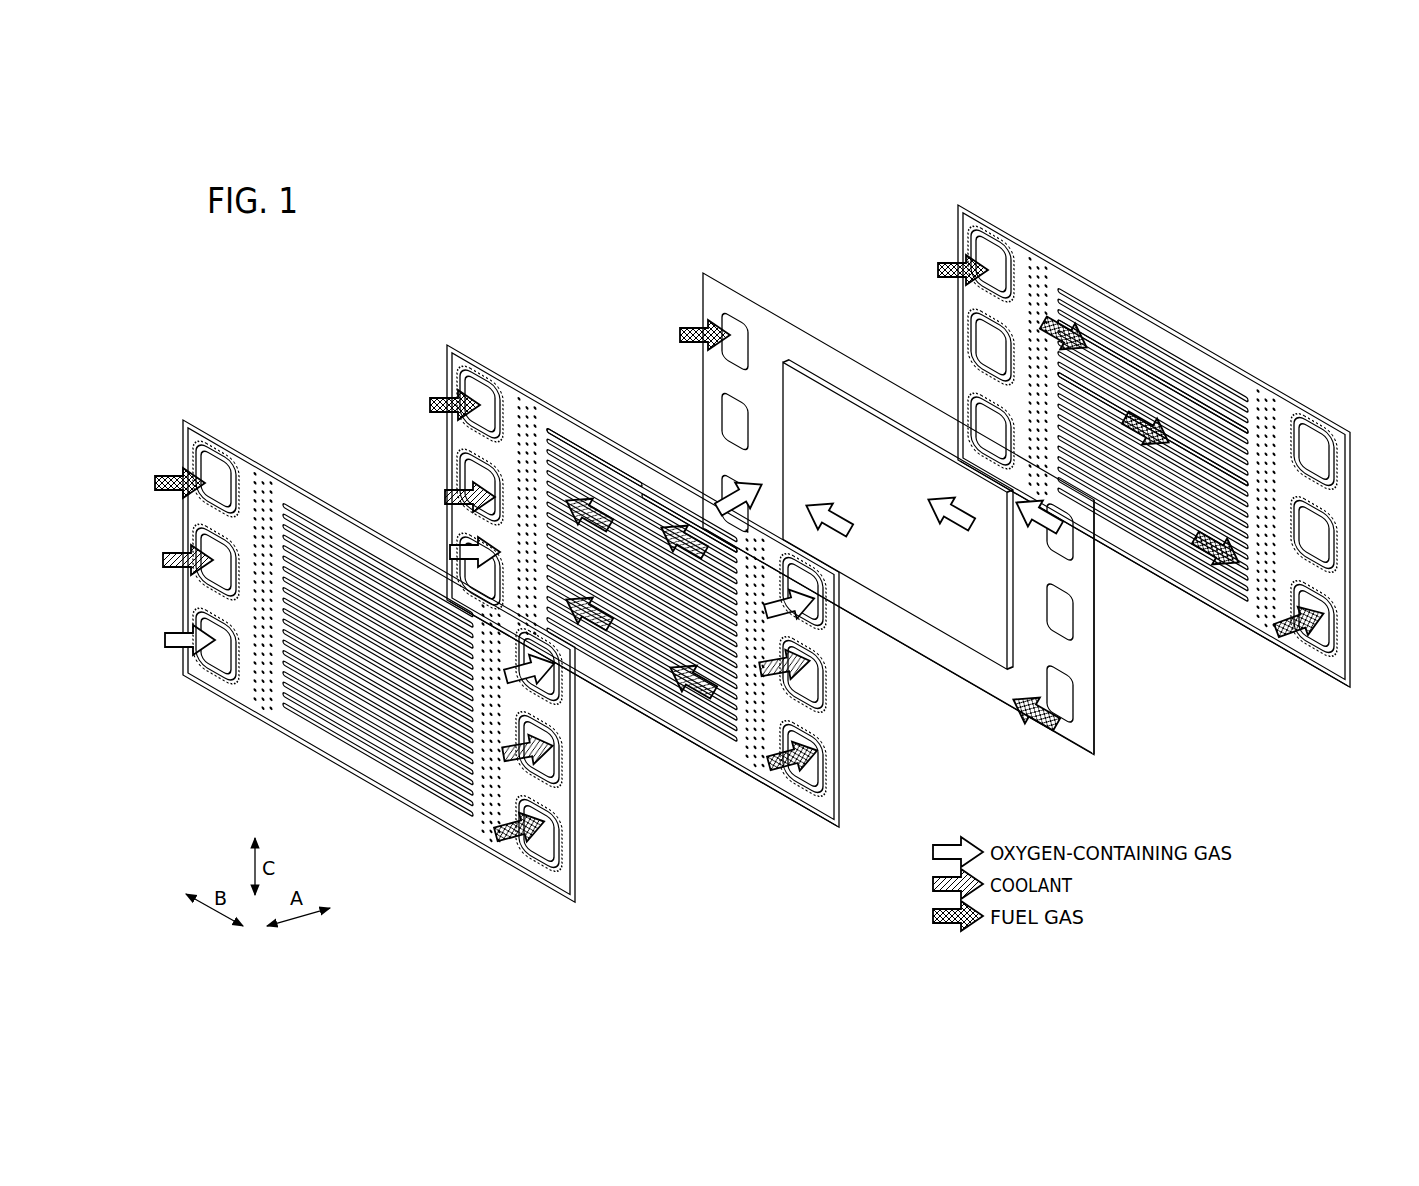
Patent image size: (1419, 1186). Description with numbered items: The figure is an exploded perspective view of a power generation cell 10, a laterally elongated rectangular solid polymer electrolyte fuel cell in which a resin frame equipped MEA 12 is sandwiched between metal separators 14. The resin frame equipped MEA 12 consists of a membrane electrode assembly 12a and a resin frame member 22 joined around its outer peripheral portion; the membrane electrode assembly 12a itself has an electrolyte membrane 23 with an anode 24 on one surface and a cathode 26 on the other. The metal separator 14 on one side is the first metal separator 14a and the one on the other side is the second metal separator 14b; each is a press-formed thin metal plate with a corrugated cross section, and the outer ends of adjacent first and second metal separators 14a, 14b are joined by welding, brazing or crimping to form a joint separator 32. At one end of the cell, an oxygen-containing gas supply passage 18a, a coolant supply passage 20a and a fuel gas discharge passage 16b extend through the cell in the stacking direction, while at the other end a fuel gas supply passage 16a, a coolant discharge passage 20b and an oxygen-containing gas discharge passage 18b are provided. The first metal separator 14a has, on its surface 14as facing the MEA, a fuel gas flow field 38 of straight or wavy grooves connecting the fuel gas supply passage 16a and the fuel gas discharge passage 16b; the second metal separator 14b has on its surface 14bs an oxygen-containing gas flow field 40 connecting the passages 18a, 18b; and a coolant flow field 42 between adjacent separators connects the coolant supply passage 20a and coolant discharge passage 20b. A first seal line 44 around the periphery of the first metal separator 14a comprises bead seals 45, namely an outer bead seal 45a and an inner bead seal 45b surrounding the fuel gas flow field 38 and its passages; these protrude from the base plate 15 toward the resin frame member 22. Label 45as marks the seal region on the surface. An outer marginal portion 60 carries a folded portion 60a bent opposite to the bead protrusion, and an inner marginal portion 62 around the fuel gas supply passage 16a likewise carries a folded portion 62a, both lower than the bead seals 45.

The power generation cell 10 is at (468, 240).
The resin frame equipped MEA 12 is at (900, 493).
The membrane electrode assembly 12a is at (1003, 665).
The metal separator 14 is at (764, 538).
The first metal separator 14a is at (766, 553).
The second metal separator 14b is at (643, 586).
The surface of the first metal separator 14as is at (1246, 612).
The surface of the second metal separator 14bs is at (735, 767).
The base plate 15 is at (503, 385).
The fuel gas supply passage 16a is at (222, 462).
The fuel gas discharge passage 16b is at (545, 858).
The oxygen-containing gas supply passage 18a is at (1322, 440).
The oxygen-containing gas discharge passage 18b is at (462, 555).
The coolant supply passage 20a is at (1300, 515).
The coolant discharge passage 20b is at (455, 487).
The resin frame member 22 is at (971, 541).
The electrolyte membrane 23 is at (960, 622).
The anode 24 is at (1017, 617).
The cathode 26 is at (948, 658).
The joint separator 32 is at (446, 300).
The fuel gas flow field 38 is at (368, 727).
The oxygen-containing gas flow field 40 is at (600, 470).
The coolant flow field 42 is at (650, 500).
The first seal line 44 is at (800, 559).
The bead seal 45 is at (801, 558).
The outer bead seal 45a is at (1153, 377).
The inner bead seal 45b is at (1153, 429).
The ridge top surface 45as is at (243, 480).
The outer marginal portion 60 is at (766, 533).
The folded portion 60a is at (196, 425).
The inner marginal portion 62 is at (765, 559).
The folded portion 62a is at (490, 558).